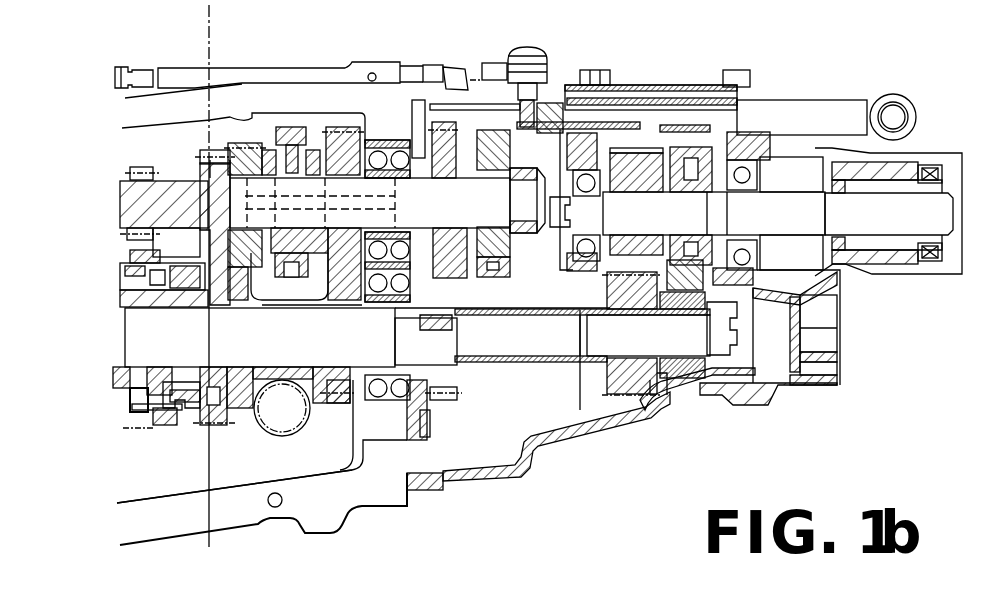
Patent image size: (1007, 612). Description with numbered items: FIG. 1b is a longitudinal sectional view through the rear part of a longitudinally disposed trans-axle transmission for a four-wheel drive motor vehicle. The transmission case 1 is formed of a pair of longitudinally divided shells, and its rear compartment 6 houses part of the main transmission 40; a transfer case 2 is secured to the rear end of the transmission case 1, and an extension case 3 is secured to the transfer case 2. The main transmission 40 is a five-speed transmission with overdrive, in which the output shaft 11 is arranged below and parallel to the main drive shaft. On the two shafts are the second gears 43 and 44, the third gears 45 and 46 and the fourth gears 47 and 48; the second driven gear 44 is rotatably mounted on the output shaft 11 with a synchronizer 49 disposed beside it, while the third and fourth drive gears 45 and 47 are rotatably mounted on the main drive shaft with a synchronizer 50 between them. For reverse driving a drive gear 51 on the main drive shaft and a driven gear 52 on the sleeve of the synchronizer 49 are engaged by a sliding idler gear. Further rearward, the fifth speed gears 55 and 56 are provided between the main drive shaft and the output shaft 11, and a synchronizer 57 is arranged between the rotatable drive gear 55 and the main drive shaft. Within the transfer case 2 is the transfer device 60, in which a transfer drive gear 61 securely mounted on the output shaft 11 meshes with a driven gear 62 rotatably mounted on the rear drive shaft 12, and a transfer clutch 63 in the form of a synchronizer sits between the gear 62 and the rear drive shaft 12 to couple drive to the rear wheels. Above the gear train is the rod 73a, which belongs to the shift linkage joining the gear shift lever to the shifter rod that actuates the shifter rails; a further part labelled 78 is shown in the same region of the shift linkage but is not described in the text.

The transmission case 1 is at (240, 505).
The transfer case 2 is at (553, 442).
The extension case 3 is at (815, 395).
The compartment 6 is at (217, 140).
The output shaft 11 is at (240, 352).
The rear drive shaft 12 is at (803, 222).
The main transmission 40 is at (188, 472).
The second gear 43 is at (205, 150).
The second driven gear 44 is at (225, 428).
The third drive gear 45 is at (245, 142).
The third gear 46 is at (255, 422).
The fourth drive gear 47 is at (342, 130).
The fourth gear 48 is at (340, 404).
The synchronizer 49 is at (170, 425).
The synchronizer 50 is at (290, 128).
The drive gear 51 is at (140, 170).
The driven gear 52 is at (140, 432).
The fifth speed gear 55 is at (440, 123).
The fifth speed gear 56 is at (452, 401).
The synchronizer 57 is at (492, 278).
The transfer device 60 is at (591, 403).
The transfer drive gear 61 is at (640, 412).
The driven gear 62 is at (640, 150).
The transfer clutch 63 is at (708, 133).
The rod 73a is at (613, 98).
The shift rail 78 is at (685, 97).